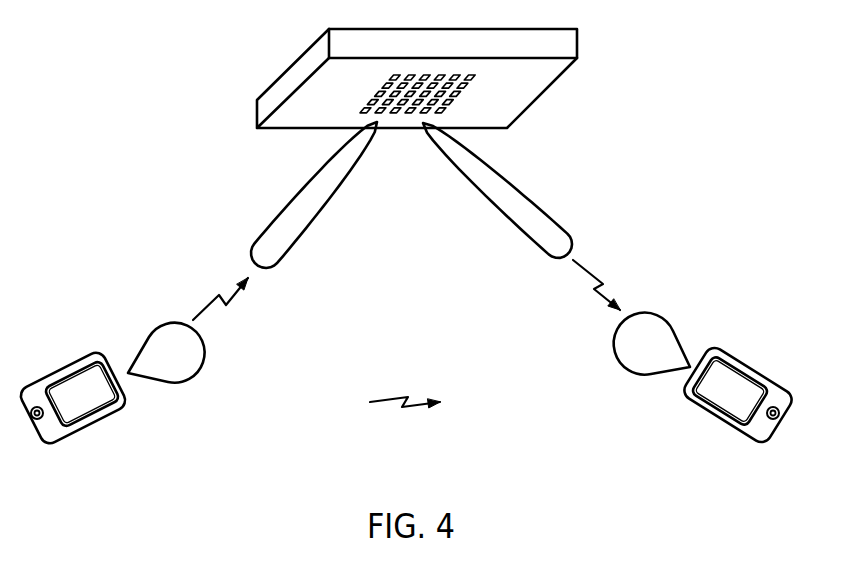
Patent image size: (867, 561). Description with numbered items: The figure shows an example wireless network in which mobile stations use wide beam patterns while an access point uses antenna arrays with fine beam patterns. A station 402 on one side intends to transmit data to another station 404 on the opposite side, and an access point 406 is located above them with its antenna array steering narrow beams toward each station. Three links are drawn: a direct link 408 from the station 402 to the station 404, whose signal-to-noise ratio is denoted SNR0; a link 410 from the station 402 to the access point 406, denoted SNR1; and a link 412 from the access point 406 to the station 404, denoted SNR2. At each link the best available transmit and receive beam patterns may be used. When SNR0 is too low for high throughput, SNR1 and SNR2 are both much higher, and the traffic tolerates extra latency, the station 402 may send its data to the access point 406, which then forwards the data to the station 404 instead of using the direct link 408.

The station 402 is at (62, 442).
The station 404 is at (762, 447).
The access point 406 is at (523, 28).
The direct link 408 is at (408, 407).
The link 410 is at (222, 300).
The link 412 is at (592, 287).